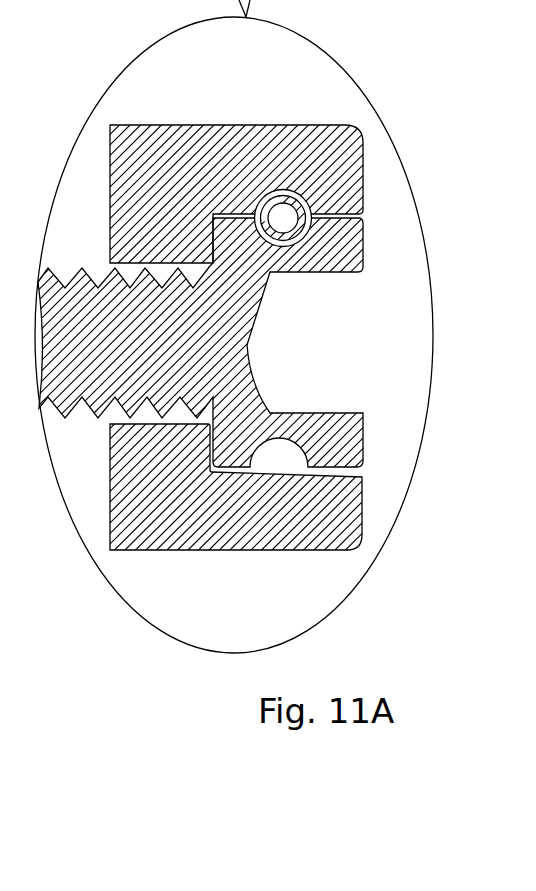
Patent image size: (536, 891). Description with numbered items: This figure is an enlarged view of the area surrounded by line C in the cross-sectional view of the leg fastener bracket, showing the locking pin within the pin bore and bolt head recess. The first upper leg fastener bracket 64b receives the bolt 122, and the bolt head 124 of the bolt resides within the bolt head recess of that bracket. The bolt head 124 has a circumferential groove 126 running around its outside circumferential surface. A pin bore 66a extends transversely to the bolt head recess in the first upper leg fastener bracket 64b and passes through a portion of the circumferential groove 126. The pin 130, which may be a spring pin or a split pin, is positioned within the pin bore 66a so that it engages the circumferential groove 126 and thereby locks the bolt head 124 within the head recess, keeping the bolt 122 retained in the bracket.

The line C is at (361, 88).
The first upper leg fastener bracket 64b is at (239, 125).
The bolt 122 is at (72, 263).
The bolt head 124 is at (363, 437).
The circumferential groove 126 is at (282, 248).
The pin 130 is at (300, 210).
The pin bore 66a is at (284, 203).